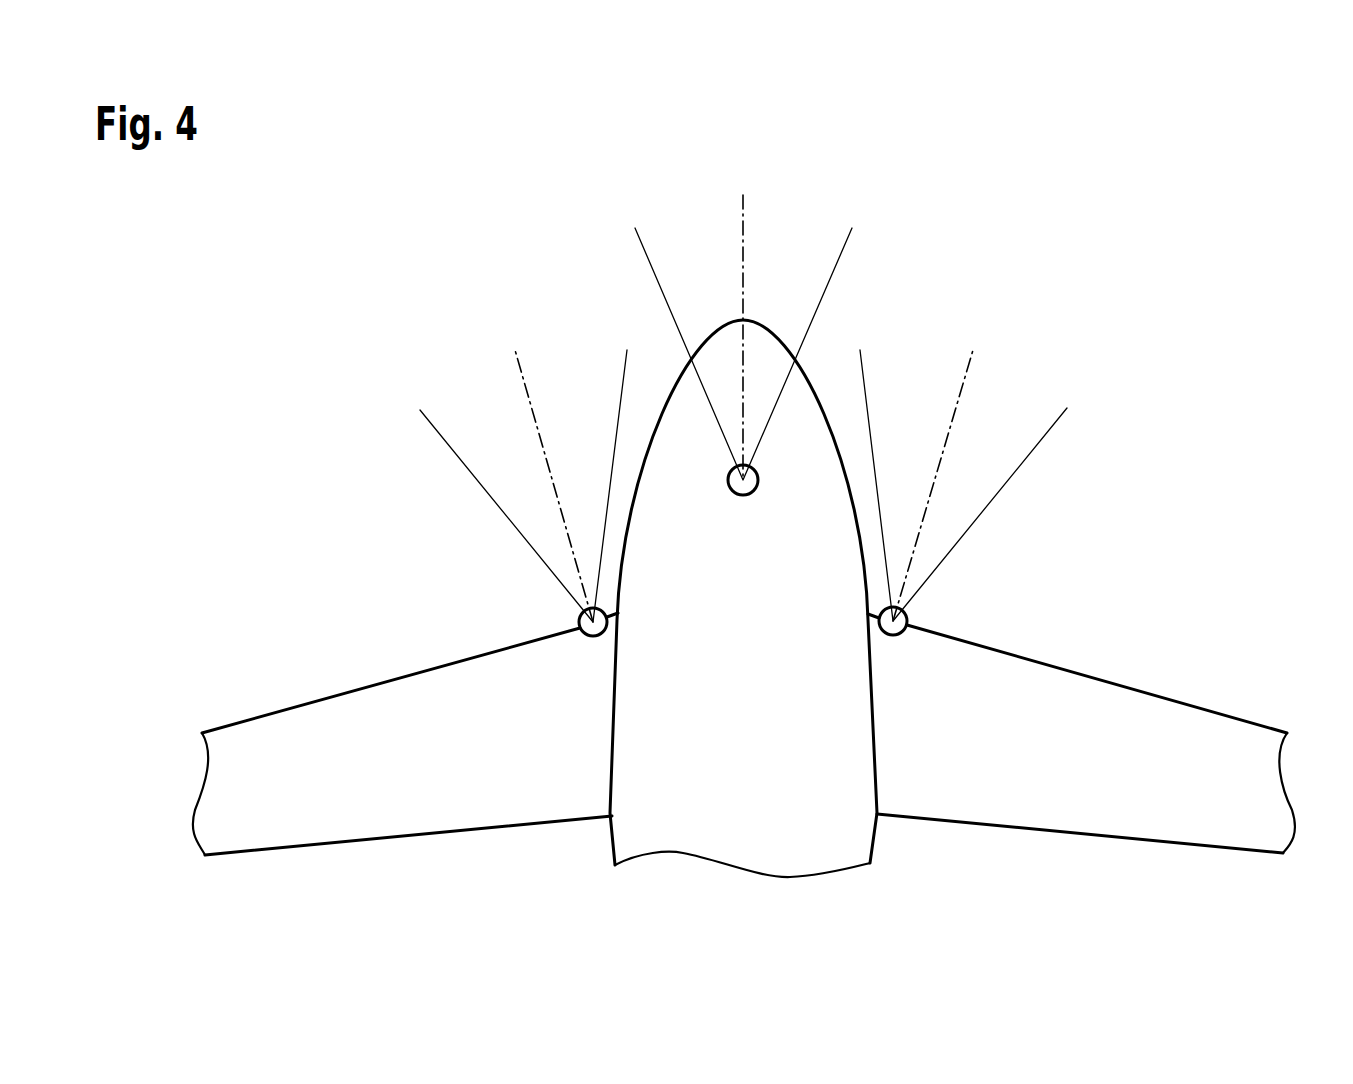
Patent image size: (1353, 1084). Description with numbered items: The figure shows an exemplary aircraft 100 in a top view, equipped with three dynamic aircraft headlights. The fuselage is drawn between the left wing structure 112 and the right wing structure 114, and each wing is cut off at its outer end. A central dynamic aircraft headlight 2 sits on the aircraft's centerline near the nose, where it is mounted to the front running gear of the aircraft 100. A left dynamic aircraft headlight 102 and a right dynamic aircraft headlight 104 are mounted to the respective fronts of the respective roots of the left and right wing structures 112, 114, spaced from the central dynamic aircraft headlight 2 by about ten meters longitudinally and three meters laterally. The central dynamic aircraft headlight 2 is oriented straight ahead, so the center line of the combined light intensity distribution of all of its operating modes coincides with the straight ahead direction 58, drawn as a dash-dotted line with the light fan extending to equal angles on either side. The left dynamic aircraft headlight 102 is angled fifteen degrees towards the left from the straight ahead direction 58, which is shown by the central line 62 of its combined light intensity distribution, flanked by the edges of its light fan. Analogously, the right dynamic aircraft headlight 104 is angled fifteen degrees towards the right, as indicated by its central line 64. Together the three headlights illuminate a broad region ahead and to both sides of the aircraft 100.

The aircraft 100 is at (1125, 462).
The left wing structure 112 is at (303, 703).
The right wing structure 114 is at (1185, 703).
The central dynamic aircraft headlight 2 is at (743, 495).
The straight ahead direction 58 is at (742, 196).
The left dynamic aircraft headlight 102 is at (588, 638).
The central line 62 is at (522, 374).
The right dynamic aircraft headlight 104 is at (900, 637).
The central line of the right dynamic aircraft headlight 64 is at (966, 374).